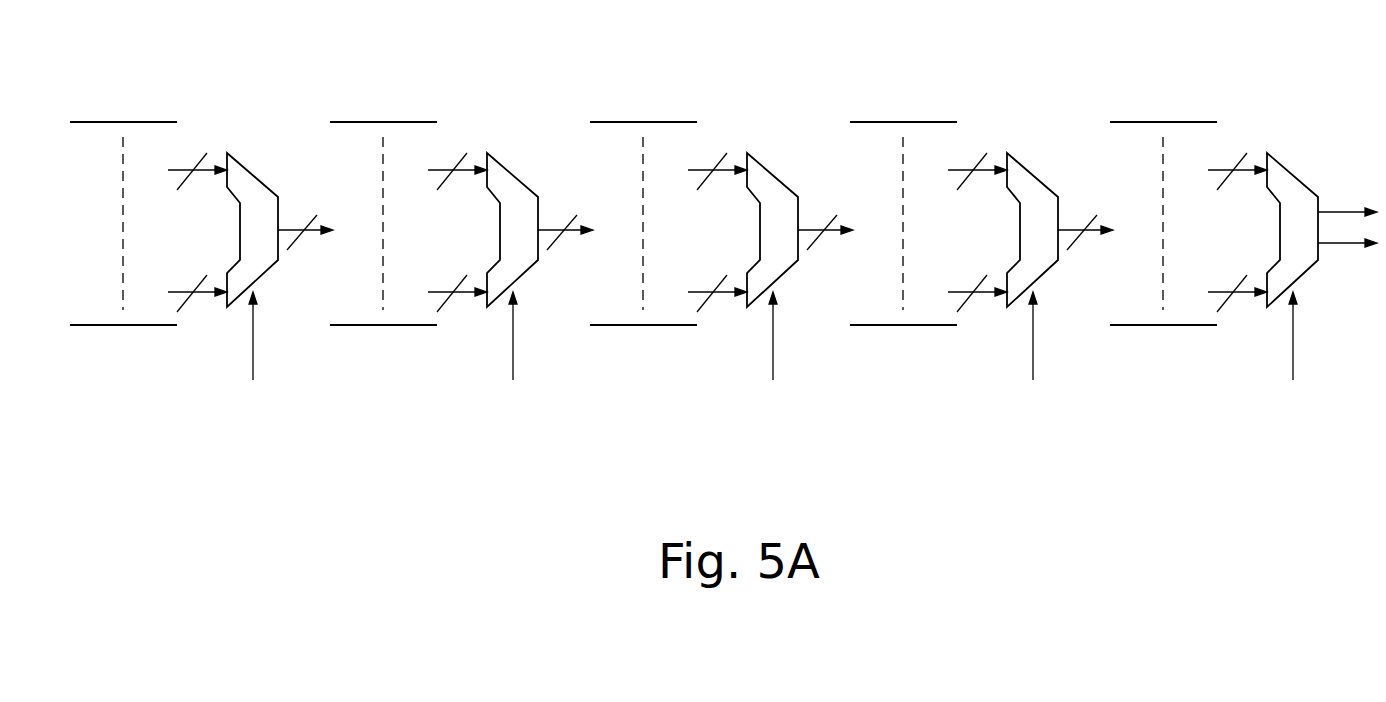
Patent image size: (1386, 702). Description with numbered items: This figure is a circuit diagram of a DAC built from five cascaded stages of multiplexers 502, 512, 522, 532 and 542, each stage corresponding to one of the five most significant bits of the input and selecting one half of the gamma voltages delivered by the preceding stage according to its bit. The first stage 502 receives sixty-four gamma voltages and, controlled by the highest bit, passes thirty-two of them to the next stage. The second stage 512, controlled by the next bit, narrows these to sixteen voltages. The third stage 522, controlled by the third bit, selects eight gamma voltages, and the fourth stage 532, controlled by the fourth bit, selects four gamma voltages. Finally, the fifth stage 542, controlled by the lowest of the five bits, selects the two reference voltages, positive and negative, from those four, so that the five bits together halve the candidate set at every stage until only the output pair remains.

The first stage multiplexer 502 is at (245, 180).
The second stage multiplexer 512 is at (505, 180).
The third stage multiplexer 522 is at (765, 180).
The fourth stage multiplexer 532 is at (1025, 180).
The fifth stage multiplexer 542 is at (1285, 180).